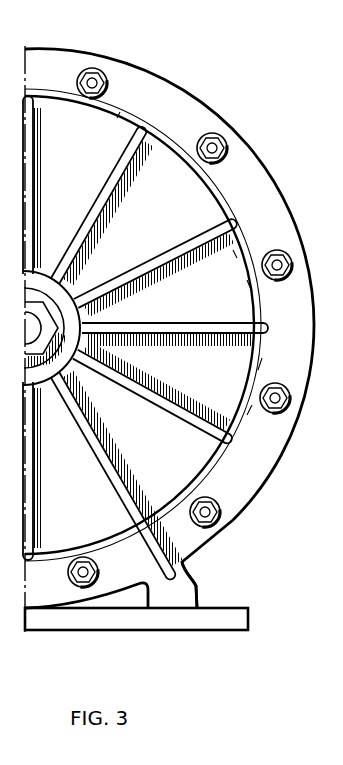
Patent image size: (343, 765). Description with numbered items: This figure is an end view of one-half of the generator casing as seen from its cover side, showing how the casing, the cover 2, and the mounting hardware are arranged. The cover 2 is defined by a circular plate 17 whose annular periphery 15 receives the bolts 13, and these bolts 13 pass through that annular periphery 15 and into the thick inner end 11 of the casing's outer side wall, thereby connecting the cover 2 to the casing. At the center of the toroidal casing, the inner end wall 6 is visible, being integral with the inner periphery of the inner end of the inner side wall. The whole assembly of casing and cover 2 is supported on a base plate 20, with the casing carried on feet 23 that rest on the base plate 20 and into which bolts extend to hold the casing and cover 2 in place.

The cover 2 is at (116, 54).
The inner end wall 6 is at (40, 328).
The inner end 11 is at (219, 186).
The bolts 13 is at (109, 76).
The annular periphery 15 is at (276, 433).
The circular plate 17 is at (175, 327).
The base plate 20 is at (101, 622).
The feet 23 is at (187, 593).